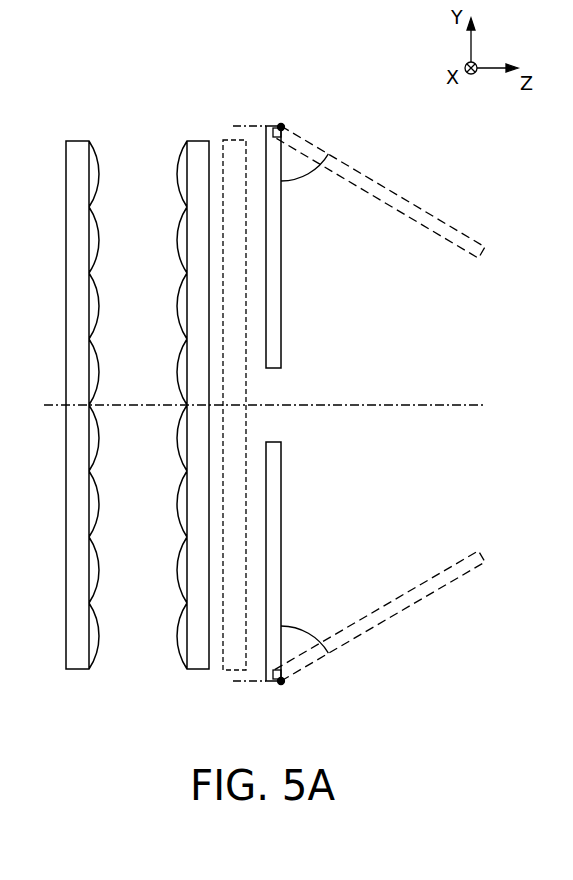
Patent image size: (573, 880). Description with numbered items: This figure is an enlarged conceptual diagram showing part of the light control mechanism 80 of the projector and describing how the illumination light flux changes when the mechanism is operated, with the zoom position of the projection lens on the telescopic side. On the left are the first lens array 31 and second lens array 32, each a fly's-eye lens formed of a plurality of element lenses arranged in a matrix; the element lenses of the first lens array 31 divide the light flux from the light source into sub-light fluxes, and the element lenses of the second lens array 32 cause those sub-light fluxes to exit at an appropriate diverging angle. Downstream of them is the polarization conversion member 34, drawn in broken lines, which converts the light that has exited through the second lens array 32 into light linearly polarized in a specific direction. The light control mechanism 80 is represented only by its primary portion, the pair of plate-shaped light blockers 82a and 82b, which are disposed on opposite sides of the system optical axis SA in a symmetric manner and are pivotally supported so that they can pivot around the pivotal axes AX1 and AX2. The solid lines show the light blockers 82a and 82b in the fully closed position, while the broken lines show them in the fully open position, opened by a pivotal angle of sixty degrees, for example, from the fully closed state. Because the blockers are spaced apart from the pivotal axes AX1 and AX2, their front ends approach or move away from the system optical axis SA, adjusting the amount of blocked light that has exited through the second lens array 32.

The first lens array 31 is at (78, 156).
The second lens array 32 is at (200, 156).
The polarization conversion member 34 is at (223, 672).
The light control mechanism 80 is at (403, 119).
The light blocker 82a is at (293, 288).
The light blocker 82b is at (296, 518).
The pivotal axis AX1 is at (284, 125).
The pivotal axis AX2 is at (282, 683).
The system optical axis SA is at (390, 408).